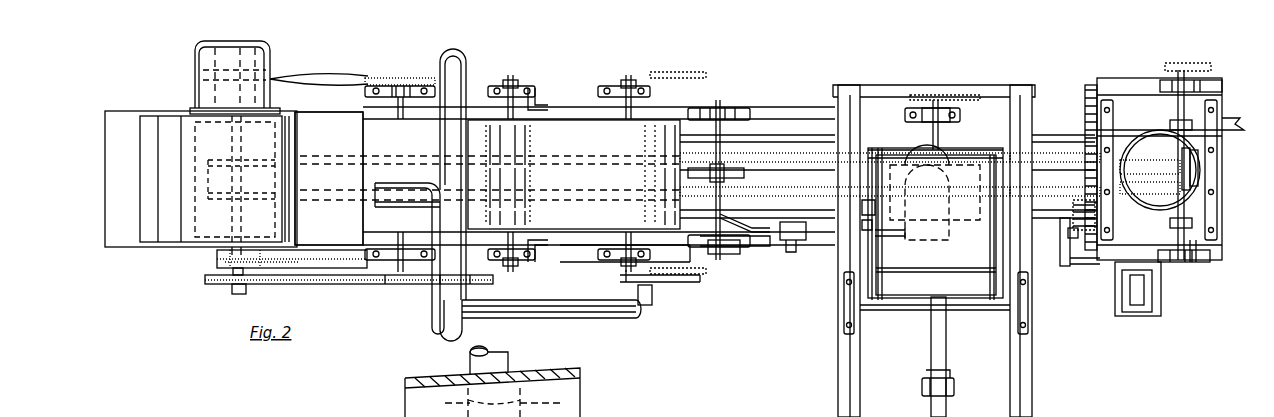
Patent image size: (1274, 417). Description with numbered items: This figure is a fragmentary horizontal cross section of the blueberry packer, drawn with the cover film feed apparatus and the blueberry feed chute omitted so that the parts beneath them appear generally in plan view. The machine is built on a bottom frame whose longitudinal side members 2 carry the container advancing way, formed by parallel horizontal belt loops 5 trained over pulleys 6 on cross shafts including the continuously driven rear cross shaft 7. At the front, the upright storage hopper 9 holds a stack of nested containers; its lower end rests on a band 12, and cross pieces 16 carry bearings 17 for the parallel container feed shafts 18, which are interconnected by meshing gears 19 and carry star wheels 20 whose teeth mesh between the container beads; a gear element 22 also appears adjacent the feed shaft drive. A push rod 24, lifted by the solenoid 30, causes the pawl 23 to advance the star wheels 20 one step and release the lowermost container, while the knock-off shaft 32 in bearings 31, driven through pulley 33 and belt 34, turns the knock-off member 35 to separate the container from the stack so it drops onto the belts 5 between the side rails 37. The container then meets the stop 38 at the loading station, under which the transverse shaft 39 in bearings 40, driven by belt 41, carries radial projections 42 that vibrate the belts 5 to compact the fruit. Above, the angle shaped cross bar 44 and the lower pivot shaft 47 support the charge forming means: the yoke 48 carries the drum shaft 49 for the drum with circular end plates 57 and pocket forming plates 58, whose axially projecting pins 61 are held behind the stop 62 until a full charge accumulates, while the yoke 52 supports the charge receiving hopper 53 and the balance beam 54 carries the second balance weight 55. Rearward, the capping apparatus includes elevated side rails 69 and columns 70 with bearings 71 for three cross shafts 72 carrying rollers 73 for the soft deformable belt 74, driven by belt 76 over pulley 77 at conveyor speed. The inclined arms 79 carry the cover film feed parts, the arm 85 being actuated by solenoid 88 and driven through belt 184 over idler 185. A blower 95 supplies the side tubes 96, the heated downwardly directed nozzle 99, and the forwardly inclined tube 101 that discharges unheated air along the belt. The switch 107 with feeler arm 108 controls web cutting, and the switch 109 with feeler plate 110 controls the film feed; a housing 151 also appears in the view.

The longitudinal side members 2 is at (740, 108).
The belt loops 5 is at (1072, 155).
The pulleys 6 is at (1160, 170).
The rear cross shaft 7 is at (239, 294).
The storage hopper 9 is at (1198, 176).
The band 12 is at (1198, 168).
The cross pieces 16 is at (1220, 118).
The bearings 17 is at (1220, 102).
The container feed shafts 18 is at (1130, 128).
The meshing gears 19 is at (1090, 92).
The star wheels 20 is at (1168, 122).
The gear 22 is at (1096, 226).
The pawl 23 is at (1066, 246).
The push rod 24 is at (1068, 266).
The solenoid 30 is at (1140, 298).
The bearings 31 is at (1212, 264).
The knock-off shaft 32 is at (1200, 246).
The pulley 33 is at (1186, 63).
The belt 34 is at (1208, 70).
The knock-off member 35 is at (1194, 164).
The side rails 37 is at (775, 136).
The stop 38 is at (929, 192).
The transverse shaft 39 is at (932, 108).
The bearings 40 is at (956, 110).
The belt 41 is at (985, 95).
The radial projections 42 is at (928, 180).
The angle shaped cross bar 44 is at (840, 373).
The lower pivot shaft 47 is at (912, 312).
The yoke 48 is at (866, 206).
The drum shaft 49 is at (883, 236).
The yoke 52 is at (876, 262).
The charge receiving hopper 53 is at (876, 152).
The balance beam 54 is at (943, 352).
The second balance weight 55 is at (955, 390).
The circular end plates 57 is at (992, 288).
The pocket forming plates 58 is at (944, 272).
The axially projecting pins 61 is at (874, 300).
The stop 62 is at (868, 225).
The elevated side rails 69 is at (590, 262).
The columns 70 is at (540, 90).
The bearings 71 is at (498, 85).
The cross shafts 72 is at (512, 80).
The rollers 73 is at (592, 416).
The deformable belt 74 is at (650, 128).
The belt 76 is at (308, 76).
The pulley 77 is at (382, 80).
The inclined arms 79 is at (706, 74).
The arm 85 is at (684, 284).
The solenoid 88 is at (645, 306).
The blower 95 is at (166, 132).
The side tubes 96 is at (440, 62).
The downwardly directed nozzle 99 is at (410, 410).
The forwardly inclined tube 101 is at (583, 305).
The switch 107 is at (793, 242).
The feeler arm 108 is at (742, 232).
The switch 109 is at (720, 256).
The feeler plate 110 is at (746, 173).
The housing 151 is at (306, 262).
The belt 184 is at (326, 270).
The idler 185 is at (398, 286).